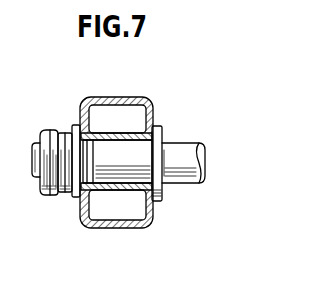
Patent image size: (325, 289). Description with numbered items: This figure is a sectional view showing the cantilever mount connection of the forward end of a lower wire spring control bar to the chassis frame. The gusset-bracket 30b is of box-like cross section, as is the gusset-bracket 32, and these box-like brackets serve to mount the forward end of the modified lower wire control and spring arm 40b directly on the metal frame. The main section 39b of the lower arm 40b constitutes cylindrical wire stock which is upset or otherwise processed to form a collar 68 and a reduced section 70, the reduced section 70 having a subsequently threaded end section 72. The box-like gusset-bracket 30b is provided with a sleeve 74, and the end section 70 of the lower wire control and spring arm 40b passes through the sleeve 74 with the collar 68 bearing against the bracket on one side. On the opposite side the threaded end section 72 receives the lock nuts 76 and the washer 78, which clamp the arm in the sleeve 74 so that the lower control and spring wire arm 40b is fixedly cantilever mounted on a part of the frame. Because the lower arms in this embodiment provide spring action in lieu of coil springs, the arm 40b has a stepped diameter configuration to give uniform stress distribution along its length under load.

The box-like gusset-bracket 30b is at (132, 217).
The gusset-bracket 32 is at (100, 238).
The main section 39b is at (181, 170).
The lower wire control and spring arm 40b is at (193, 136).
The collar 68 is at (157, 134).
The reduced section 70 is at (132, 153).
The threaded end section 72 is at (93, 155).
The sleeve 74 is at (116, 133).
The lock nuts 76 is at (66, 196).
The washer 78 is at (77, 126).